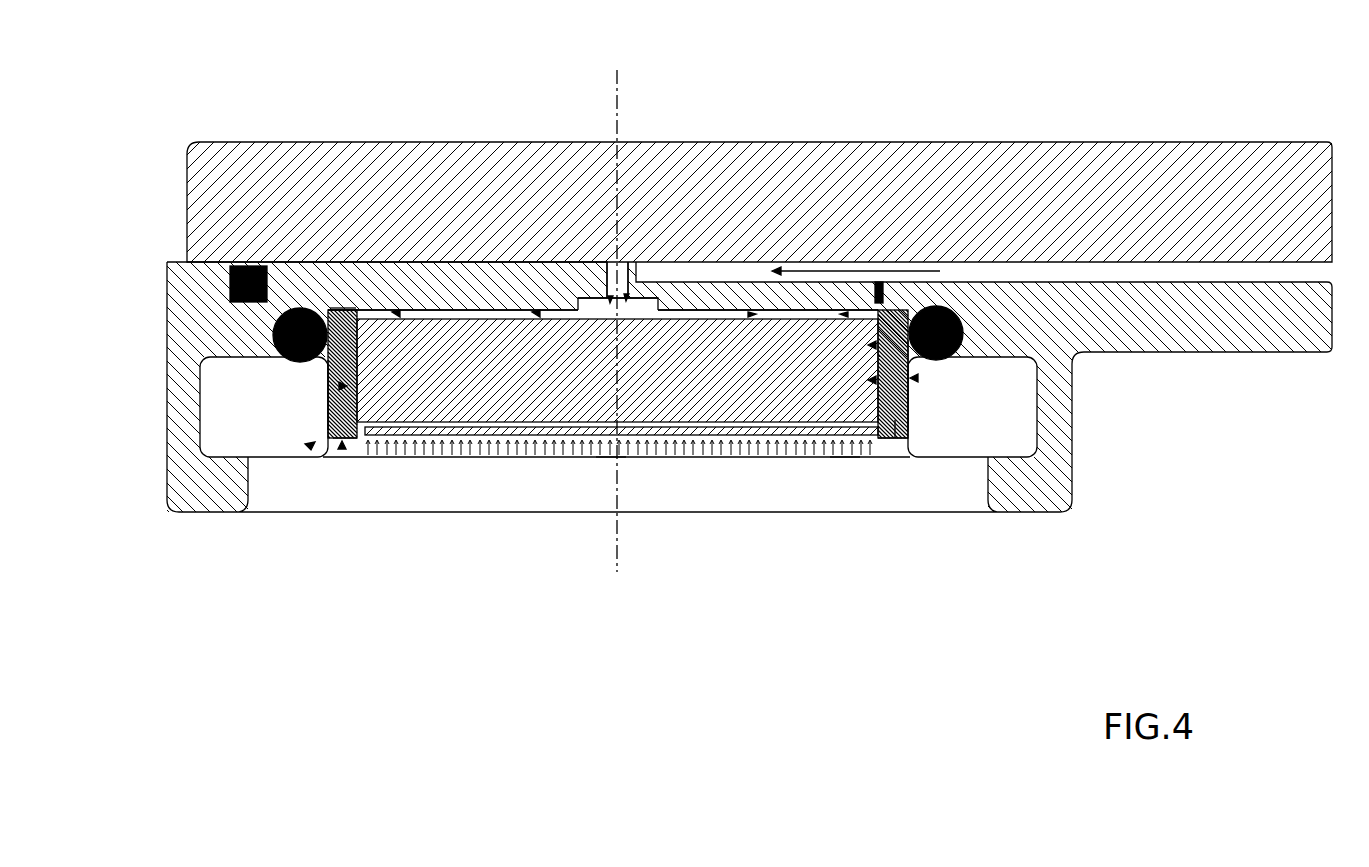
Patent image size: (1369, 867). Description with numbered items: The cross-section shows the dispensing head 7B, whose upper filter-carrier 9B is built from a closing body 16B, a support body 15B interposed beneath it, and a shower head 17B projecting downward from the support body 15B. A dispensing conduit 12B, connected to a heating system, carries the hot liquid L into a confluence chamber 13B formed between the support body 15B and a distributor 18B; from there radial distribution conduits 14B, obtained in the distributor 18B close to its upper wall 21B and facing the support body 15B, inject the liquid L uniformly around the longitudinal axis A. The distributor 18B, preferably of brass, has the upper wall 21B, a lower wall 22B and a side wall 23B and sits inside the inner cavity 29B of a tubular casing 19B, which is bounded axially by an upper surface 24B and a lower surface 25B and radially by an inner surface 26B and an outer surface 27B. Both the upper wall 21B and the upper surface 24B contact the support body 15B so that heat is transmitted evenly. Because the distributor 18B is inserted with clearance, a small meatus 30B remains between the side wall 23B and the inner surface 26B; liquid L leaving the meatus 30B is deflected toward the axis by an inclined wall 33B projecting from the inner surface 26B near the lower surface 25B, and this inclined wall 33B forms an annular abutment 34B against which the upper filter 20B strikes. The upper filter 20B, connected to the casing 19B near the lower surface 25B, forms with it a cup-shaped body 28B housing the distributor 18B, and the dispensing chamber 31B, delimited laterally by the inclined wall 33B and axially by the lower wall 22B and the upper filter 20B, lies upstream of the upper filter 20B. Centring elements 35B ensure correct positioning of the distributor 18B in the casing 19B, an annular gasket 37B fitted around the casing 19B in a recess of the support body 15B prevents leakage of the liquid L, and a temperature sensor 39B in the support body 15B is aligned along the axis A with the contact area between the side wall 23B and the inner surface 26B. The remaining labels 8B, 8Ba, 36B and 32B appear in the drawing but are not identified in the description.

The dispensing head 7B is at (540, 108).
The closing body 16B is at (208, 197).
The support body 15B is at (170, 302).
The seal member 8B is at (236, 188).
The seal member projection 8Ba is at (250, 266).
The centring elements 35B is at (338, 306).
The upper surface 24B is at (350, 318).
The meatus 30B is at (398, 312).
The distribution conduits 14B is at (465, 308).
The inner cavity 29B is at (537, 310).
The upper wall 21B is at (618, 296).
The confluence area or chamber 13B is at (658, 300).
The inner surface 26B is at (890, 310).
The hot liquid L is at (883, 285).
The temperature sensor 39B is at (881, 300).
The second O-ring 36B is at (948, 318).
The outer surface 27B is at (916, 378).
The annular gasket 37B is at (275, 340).
The side wall 23B is at (340, 386).
The shower head 17B is at (315, 412).
The distributor 18B is at (911, 377).
The dispensing conduit 12B is at (1117, 262).
The upper filter-carrier 9B is at (168, 537).
The cup-shaped body 28B is at (311, 446).
The lower surface 25B is at (343, 448).
The terminals 32B is at (392, 456).
The upper filter 20B is at (488, 455).
The dispensing chamber 31B is at (604, 456).
The lower wall 22B is at (724, 424).
The inclined wall 33B is at (843, 456).
The annular abutment 34B is at (873, 450).
The casing 19B is at (905, 432).
The longitudinal axis A is at (612, 555).